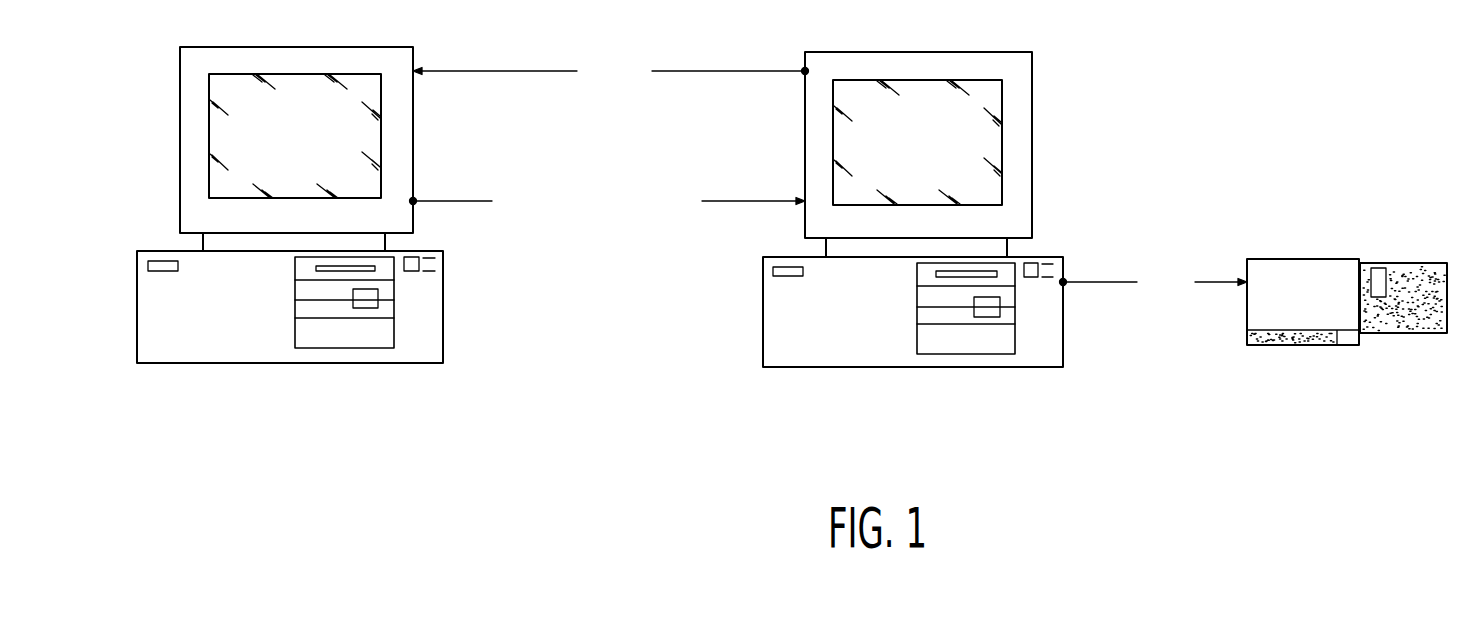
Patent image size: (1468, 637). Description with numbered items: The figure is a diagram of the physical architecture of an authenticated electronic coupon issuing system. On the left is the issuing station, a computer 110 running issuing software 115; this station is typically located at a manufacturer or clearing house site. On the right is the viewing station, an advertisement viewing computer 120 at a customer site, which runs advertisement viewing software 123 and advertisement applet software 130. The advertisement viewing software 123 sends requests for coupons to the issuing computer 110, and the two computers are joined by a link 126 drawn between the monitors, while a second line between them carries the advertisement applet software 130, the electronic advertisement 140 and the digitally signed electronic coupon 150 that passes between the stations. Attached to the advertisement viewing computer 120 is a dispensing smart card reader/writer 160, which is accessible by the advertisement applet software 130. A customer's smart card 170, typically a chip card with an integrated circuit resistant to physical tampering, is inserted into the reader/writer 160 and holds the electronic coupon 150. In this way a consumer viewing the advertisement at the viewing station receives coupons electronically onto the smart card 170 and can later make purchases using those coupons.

The computer 110 is at (343, 241).
The issuing software 115 is at (199, 331).
The advertisement viewing computer 120 is at (964, 240).
The advertisement viewing software 123 is at (913, 312).
The connection between computers 126 is at (611, 72).
The advertisement applet software 130 is at (542, 199).
The electronic advertisement 140 is at (753, 201).
The electronic coupon 150 is at (1408, 198).
The dispensing smart card reader/writer 160 is at (1285, 347).
The smart card 170 is at (1427, 333).